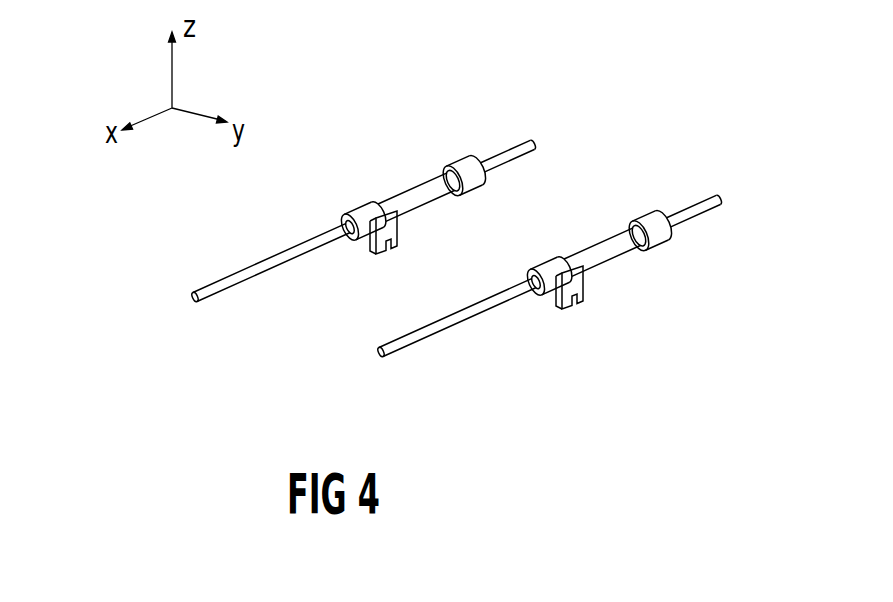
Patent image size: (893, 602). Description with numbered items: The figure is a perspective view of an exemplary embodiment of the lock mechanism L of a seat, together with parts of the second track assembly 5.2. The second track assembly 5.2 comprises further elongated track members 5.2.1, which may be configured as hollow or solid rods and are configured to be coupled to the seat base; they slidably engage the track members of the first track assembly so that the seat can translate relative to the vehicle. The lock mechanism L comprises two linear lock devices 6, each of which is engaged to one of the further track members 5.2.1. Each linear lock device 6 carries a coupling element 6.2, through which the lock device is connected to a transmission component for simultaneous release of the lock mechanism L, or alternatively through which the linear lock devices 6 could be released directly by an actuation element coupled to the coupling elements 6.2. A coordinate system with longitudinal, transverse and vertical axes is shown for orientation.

The second track assembly 5.2 is at (637, 131).
The linear lock device 6 is at (427, 192).
The coupling element 6.2 is at (378, 222).
The further elongated track member 5.2.1 is at (190, 295).
The lock mechanism L is at (660, 266).